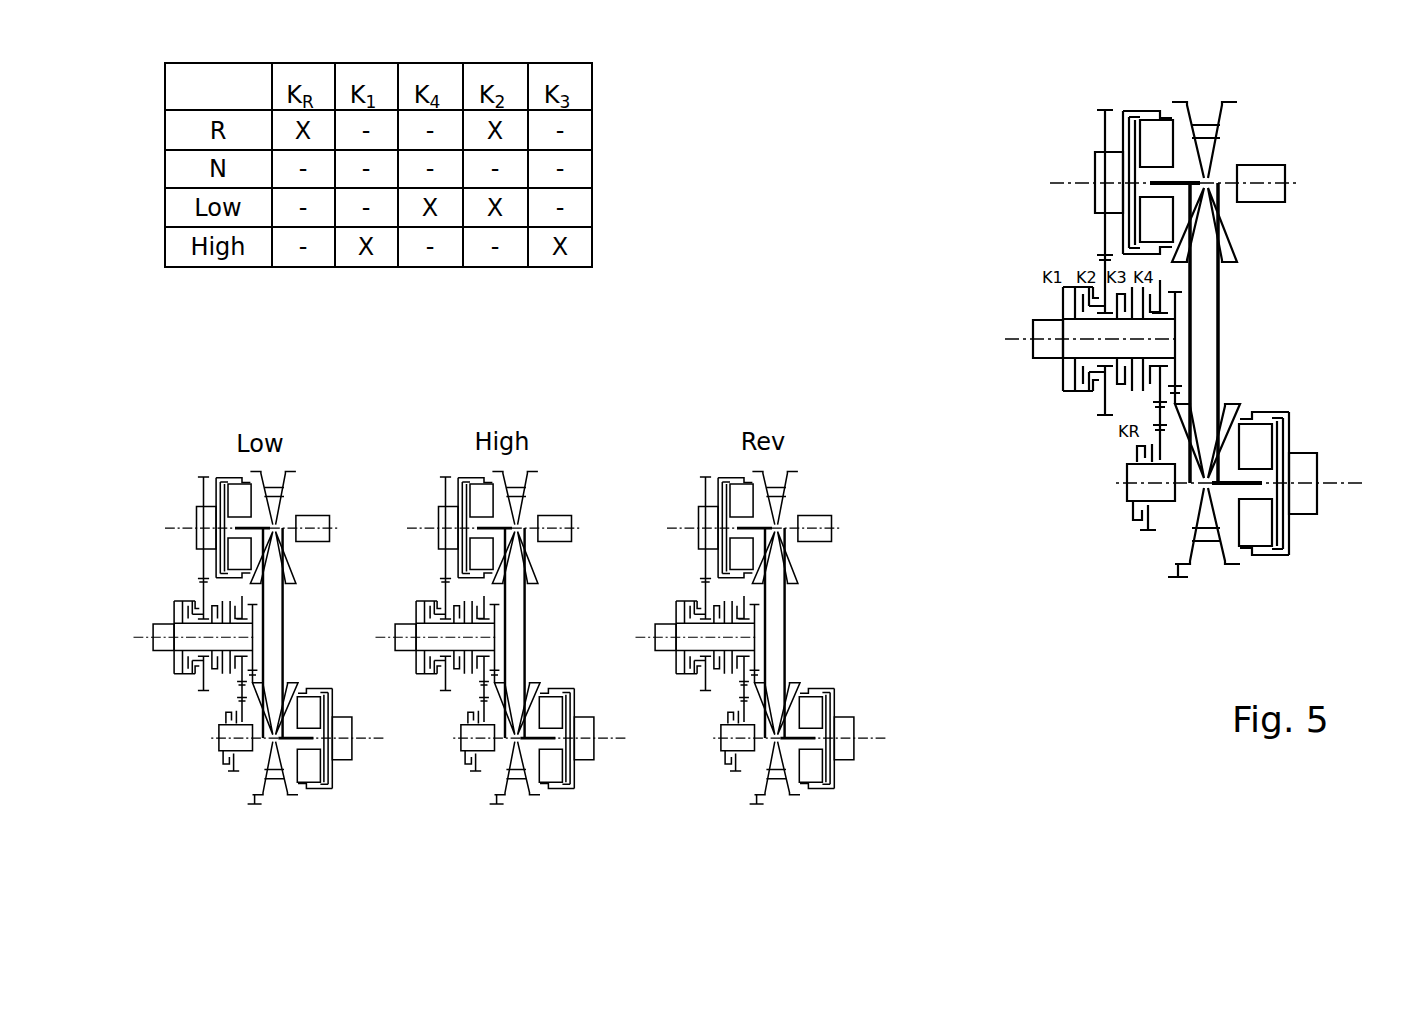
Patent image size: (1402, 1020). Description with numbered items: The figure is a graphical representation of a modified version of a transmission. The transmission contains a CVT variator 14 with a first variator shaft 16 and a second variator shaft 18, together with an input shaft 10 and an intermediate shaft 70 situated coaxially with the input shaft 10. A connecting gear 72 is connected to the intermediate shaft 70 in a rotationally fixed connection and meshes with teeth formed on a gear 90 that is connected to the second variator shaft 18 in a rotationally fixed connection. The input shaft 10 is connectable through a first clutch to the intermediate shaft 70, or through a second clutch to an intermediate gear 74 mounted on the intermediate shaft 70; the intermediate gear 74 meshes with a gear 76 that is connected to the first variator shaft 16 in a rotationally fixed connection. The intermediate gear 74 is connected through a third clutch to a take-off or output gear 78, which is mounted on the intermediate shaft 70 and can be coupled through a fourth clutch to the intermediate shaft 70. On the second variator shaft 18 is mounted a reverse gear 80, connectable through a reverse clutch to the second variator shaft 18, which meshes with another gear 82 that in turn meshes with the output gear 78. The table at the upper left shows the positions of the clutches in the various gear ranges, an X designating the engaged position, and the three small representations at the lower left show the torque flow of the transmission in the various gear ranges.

The input shaft 10 is at (1040, 349).
The CVT variator 14 is at (1205, 84).
The first variator shaft 16 is at (1285, 179).
The second variator shaft 18 is at (1312, 505).
The intermediate shaft 70 is at (1165, 348).
The connecting gear 72 is at (1177, 373).
The intermediate gear 74 is at (1102, 404).
The gear 76 is at (1101, 237).
The output gear 78 is at (1188, 285).
The reverse gear 80 is at (1148, 523).
The gear 82 is at (1150, 412).
The gear 90 is at (1168, 573).